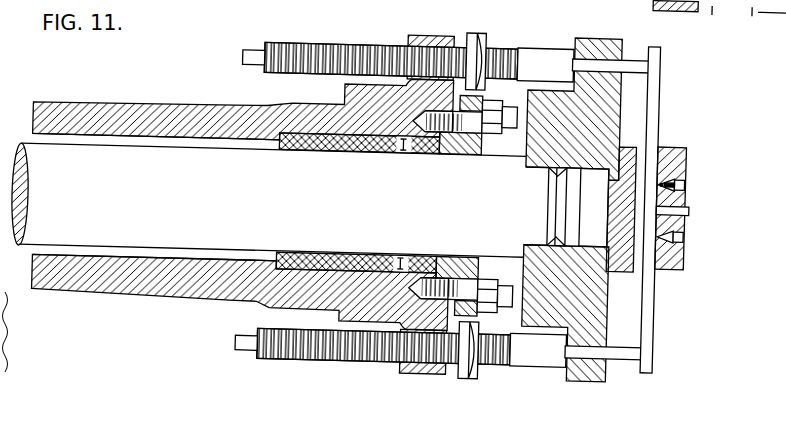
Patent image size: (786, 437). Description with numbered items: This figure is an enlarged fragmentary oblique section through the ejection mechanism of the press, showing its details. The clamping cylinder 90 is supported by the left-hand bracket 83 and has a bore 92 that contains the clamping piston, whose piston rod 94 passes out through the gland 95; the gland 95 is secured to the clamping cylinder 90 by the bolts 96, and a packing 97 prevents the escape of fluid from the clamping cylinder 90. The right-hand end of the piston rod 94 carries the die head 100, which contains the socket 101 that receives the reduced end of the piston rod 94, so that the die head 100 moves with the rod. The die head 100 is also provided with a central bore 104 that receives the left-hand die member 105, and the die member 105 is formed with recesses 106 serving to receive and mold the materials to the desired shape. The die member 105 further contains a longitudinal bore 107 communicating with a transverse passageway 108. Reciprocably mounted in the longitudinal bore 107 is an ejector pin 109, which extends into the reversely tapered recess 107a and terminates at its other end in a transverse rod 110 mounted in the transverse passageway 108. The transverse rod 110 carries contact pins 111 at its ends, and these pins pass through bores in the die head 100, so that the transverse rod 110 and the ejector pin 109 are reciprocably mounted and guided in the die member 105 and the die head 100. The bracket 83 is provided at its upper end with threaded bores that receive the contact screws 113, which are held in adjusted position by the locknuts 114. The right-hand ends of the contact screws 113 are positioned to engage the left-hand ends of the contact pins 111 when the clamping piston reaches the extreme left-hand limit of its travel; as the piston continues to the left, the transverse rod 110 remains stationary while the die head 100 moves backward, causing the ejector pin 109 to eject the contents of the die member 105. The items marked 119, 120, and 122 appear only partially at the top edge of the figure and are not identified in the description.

The bracket 83 is at (428, 35).
The clamping cylinder 90 is at (145, 110).
The bore 92 is at (188, 140).
The piston rod 94 is at (20, 152).
The gland 95 is at (474, 150).
The bolts 96 is at (497, 107).
The packing 97 is at (330, 153).
The die head 100 is at (590, 34).
The socket 101 is at (527, 165).
The central bore 104 is at (590, 178).
The die member 105 is at (685, 141).
The recesses 106 is at (688, 176).
The longitudinal bore 107 is at (685, 189).
The reversely tapered recess 107a is at (684, 195).
The transverse passageway 108 is at (637, 270).
The ejector pin 109 is at (690, 204).
The transverse rod 110 is at (657, 93).
The contact pins 111 is at (633, 56).
The contact screws 113 is at (318, 46).
The locknuts 114 is at (471, 31).
The lever 119 is at (709, 17).
The link 120 is at (761, 17).
The bracket 122 is at (659, 6).